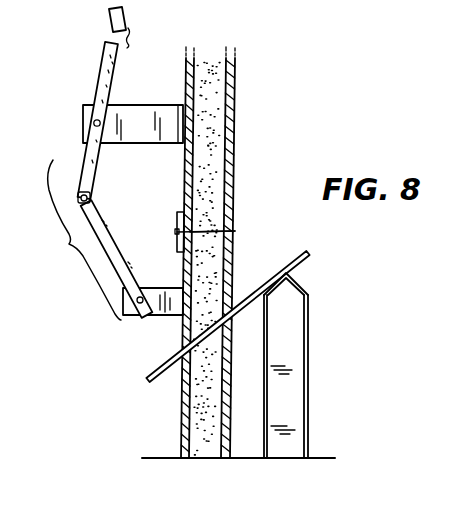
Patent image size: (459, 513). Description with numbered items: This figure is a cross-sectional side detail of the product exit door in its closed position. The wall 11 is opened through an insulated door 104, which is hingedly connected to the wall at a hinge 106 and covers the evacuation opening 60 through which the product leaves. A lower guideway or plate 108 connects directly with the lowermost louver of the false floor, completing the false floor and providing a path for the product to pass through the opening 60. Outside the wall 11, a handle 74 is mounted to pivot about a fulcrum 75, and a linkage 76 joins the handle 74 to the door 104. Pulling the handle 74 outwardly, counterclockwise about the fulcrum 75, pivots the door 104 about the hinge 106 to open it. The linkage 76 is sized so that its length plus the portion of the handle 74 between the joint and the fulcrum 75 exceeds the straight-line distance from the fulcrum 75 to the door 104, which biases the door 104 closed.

The wall 11 is at (233, 141).
The evacuation opening 60 is at (84, 285).
The handle 74 is at (113, 63).
The fulcrum 75 is at (93, 123).
The linkage 76 is at (110, 240).
The insulated door 104 is at (233, 253).
The hinge 106 is at (175, 231).
The lower guideway or plate 108 is at (308, 260).